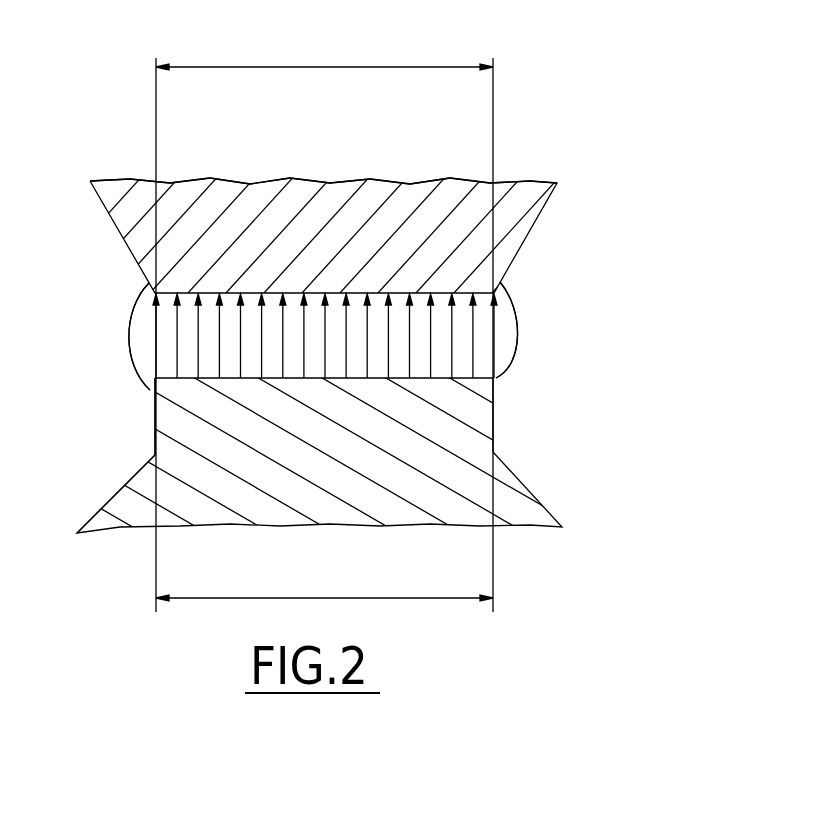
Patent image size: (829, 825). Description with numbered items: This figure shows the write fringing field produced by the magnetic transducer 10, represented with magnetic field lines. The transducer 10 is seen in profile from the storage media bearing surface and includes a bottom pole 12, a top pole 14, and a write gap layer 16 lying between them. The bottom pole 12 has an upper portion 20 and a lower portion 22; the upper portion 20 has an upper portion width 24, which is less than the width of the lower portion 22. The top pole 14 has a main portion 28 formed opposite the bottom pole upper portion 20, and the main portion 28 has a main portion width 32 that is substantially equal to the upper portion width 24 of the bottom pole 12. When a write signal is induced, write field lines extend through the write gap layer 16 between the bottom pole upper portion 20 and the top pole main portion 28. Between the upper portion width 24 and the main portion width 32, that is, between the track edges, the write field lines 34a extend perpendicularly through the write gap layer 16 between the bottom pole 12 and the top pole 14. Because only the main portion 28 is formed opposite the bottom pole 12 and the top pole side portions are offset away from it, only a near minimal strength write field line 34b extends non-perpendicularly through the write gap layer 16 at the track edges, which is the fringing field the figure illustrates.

The magnetic transducer 10 is at (634, 57).
The bottom pole 12 is at (500, 416).
The top pole 14 is at (548, 218).
The write gap layer 16 is at (331, 349).
The bottom pole upper portion 20 is at (155, 405).
The bottom pole lower portion 22 is at (105, 498).
The upper portion width 24 is at (322, 595).
The top pole main portion 28 is at (328, 177).
The main portion width 32 is at (334, 64).
The write field lines 34a is at (173, 338).
The write field line 34b is at (130, 340).